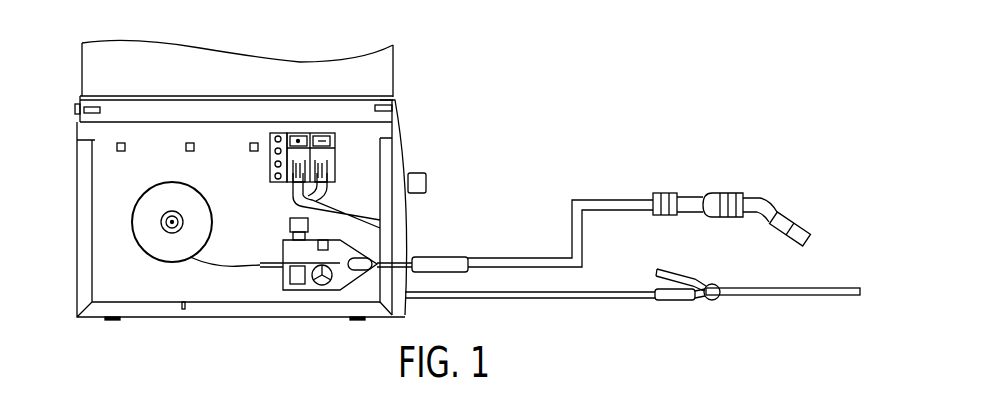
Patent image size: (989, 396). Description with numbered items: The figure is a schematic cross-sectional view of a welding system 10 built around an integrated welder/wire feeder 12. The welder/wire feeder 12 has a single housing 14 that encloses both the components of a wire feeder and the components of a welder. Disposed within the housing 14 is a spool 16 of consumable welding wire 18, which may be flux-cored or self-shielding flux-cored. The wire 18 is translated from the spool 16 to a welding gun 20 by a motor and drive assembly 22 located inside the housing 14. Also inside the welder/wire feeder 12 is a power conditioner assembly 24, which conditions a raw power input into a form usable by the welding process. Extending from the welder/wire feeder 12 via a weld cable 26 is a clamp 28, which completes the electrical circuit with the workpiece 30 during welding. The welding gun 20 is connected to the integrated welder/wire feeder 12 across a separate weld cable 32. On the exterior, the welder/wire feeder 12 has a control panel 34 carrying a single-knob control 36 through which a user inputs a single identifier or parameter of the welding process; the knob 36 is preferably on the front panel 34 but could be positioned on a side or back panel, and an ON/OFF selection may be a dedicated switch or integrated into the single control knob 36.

The welding system 10 is at (601, 89).
The integrated welder/wire feeder 12 is at (70, 70).
The housing 14 is at (78, 133).
The spool 16 is at (138, 256).
The welding wire 18 is at (233, 270).
The welding gun 20 is at (762, 197).
The motor and drive assembly 22 is at (365, 289).
The power conditioner assembly 24 is at (355, 155).
The weld cable 26 is at (562, 300).
The clamp 28 is at (672, 300).
The workpiece 30 is at (838, 289).
The weld cable 32 is at (572, 228).
The control panel 34 is at (404, 216).
The single-knob control 36 is at (427, 181).